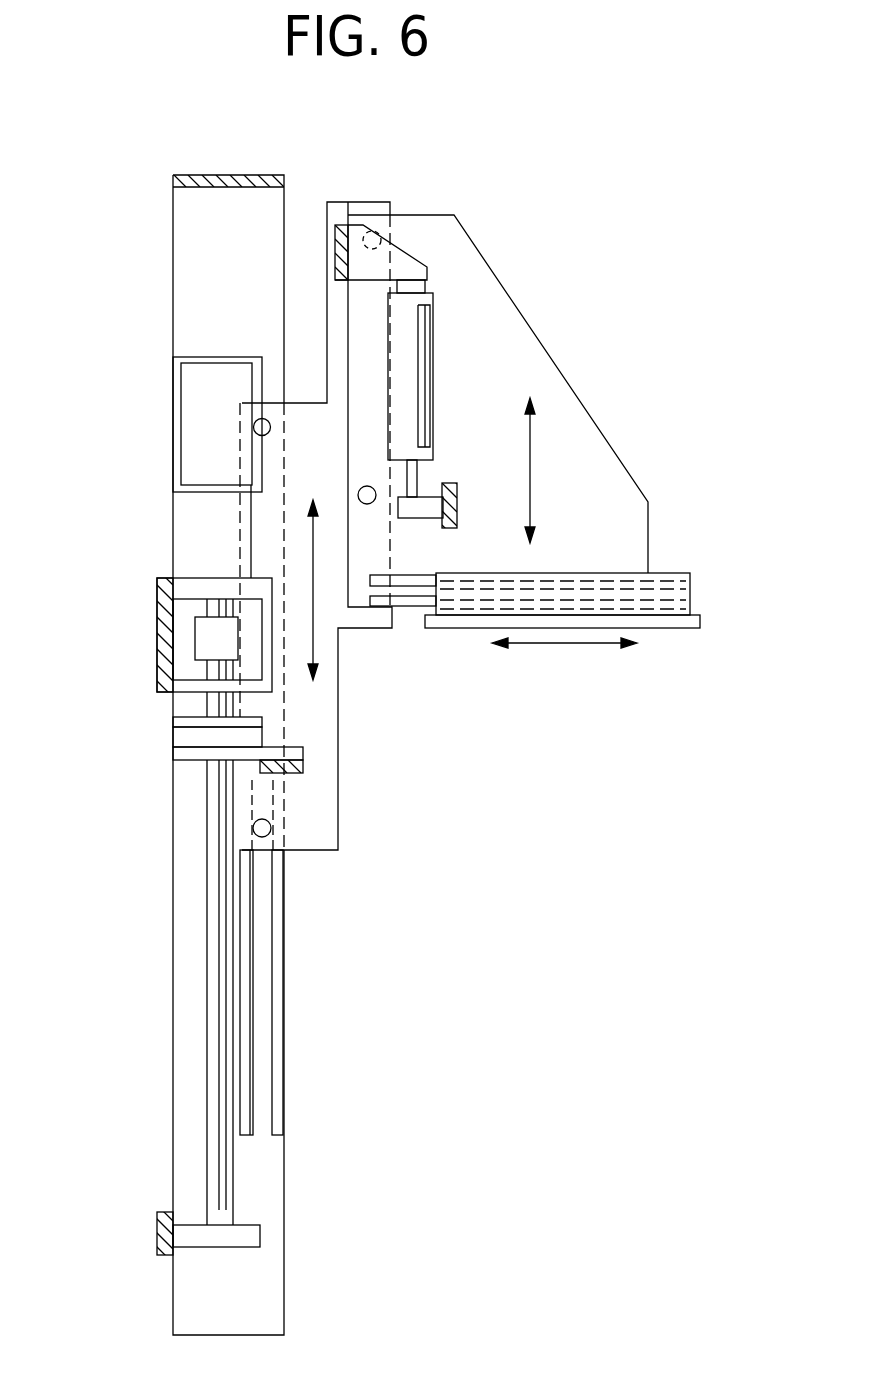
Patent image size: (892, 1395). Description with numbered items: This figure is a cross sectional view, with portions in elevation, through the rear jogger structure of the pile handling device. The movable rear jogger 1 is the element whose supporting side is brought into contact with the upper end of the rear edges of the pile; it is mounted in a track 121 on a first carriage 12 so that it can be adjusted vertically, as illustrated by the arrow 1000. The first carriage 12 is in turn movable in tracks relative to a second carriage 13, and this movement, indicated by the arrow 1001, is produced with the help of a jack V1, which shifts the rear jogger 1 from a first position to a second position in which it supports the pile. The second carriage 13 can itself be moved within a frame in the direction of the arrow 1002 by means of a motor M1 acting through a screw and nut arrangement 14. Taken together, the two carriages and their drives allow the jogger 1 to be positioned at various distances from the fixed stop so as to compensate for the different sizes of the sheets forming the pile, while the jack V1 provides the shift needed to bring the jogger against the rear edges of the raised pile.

The movable rear jogger 1 is at (673, 620).
The first carriage 12 is at (590, 468).
The track 121 is at (410, 605).
The second carriage 13 is at (300, 449).
The screw and nut arrangement 14 is at (222, 910).
The motor M1 is at (188, 467).
The jack V1 is at (433, 320).
The arrow indicating vertical adjustability 1000 is at (572, 647).
The arrow indicating first carriage movement 1001 is at (532, 465).
The arrow indicating second carriage movement 1002 is at (313, 612).